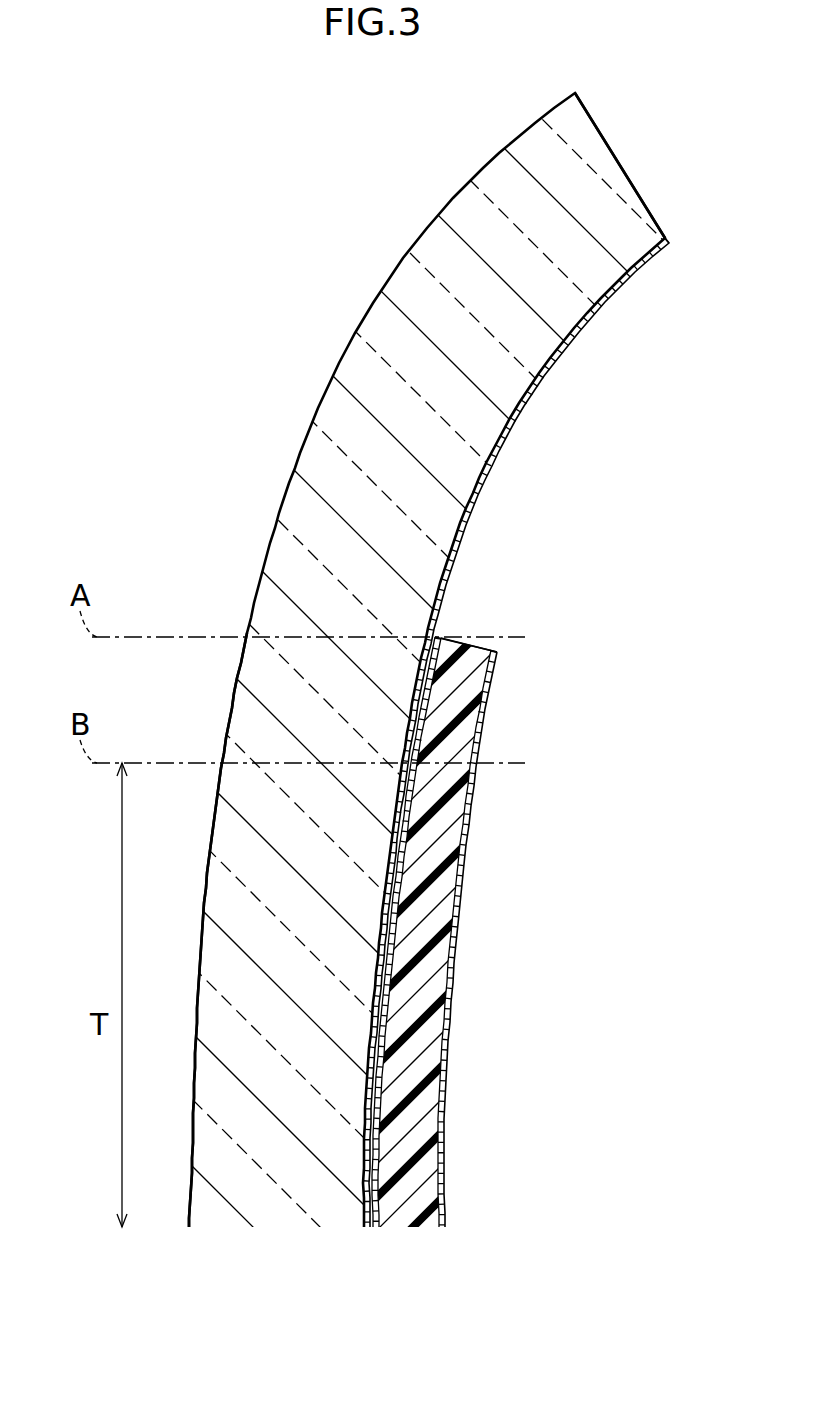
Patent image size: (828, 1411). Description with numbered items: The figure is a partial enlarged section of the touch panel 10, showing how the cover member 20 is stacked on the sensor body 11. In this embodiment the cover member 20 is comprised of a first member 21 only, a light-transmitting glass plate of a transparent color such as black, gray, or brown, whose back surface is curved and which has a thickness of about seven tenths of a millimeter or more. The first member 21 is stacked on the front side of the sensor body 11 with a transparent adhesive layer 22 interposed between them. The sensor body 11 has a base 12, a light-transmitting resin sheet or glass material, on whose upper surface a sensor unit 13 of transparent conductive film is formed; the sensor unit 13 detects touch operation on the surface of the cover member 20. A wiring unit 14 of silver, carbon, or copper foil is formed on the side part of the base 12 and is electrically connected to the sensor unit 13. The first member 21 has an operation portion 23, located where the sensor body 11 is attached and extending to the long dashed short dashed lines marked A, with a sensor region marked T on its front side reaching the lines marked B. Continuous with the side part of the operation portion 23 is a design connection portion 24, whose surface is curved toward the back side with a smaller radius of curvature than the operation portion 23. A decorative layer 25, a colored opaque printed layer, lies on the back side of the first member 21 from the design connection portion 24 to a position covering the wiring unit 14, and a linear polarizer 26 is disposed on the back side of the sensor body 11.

The touch panel 10 is at (250, 277).
The cover member 20 is at (477, 170).
The first member 21 is at (477, 170).
The adhesive layer 22 is at (371, 1225).
The operation portion 23 is at (212, 842).
The design connection portion 24 is at (318, 405).
The decorative layer 25 is at (565, 349).
The linear polarizer 26 is at (465, 862).
The sensor body 11 is at (481, 648).
The base 12 is at (406, 1224).
The sensor unit 13 is at (384, 1213).
The wiring unit 14 is at (441, 636).